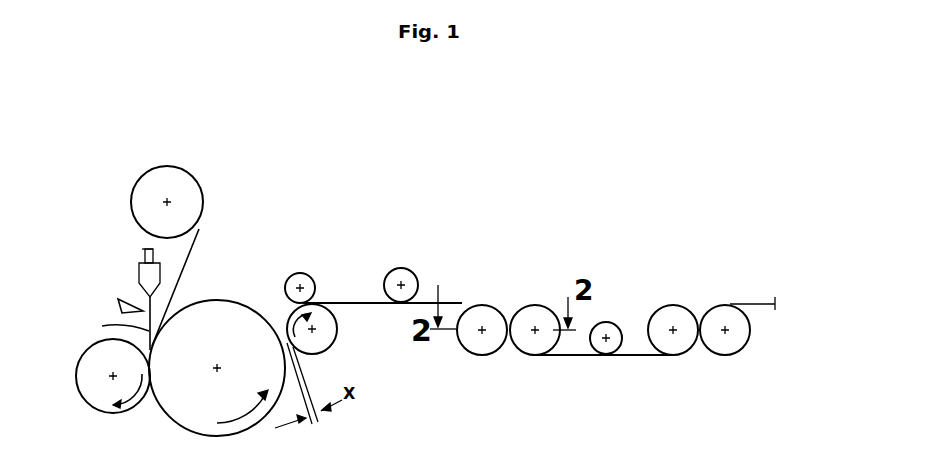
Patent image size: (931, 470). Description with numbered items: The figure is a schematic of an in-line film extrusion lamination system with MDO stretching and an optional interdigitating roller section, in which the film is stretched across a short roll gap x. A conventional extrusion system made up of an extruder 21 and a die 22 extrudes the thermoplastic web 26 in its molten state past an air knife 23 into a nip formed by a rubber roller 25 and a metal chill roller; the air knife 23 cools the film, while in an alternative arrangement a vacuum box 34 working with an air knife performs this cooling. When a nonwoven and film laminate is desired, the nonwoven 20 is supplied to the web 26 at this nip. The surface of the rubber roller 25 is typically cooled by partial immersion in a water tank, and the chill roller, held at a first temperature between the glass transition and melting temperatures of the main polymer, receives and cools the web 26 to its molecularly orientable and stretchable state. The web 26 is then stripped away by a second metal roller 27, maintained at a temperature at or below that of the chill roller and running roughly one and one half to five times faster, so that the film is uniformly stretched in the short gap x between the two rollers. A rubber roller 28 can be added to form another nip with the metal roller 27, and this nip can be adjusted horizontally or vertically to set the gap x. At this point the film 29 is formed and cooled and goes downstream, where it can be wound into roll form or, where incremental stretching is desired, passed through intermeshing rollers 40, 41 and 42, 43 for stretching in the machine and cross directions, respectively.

The nonwoven 20 is at (205, 192).
The extruder 21 is at (145, 252).
The die 22 is at (139, 276).
The air knife 23 is at (118, 302).
The rubber roller 25 is at (88, 391).
The thermoplastic web 26 is at (113, 324).
The second roller 27 is at (325, 351).
The rubber roller 28 is at (294, 272).
The film 29 is at (345, 302).
The vacuum box 34 is at (232, 289).
The intermeshing roller 40 is at (470, 352).
The intermeshing roller 41 is at (522, 352).
The intermeshing roller 42 is at (673, 355).
The intermeshing roller 43 is at (732, 354).